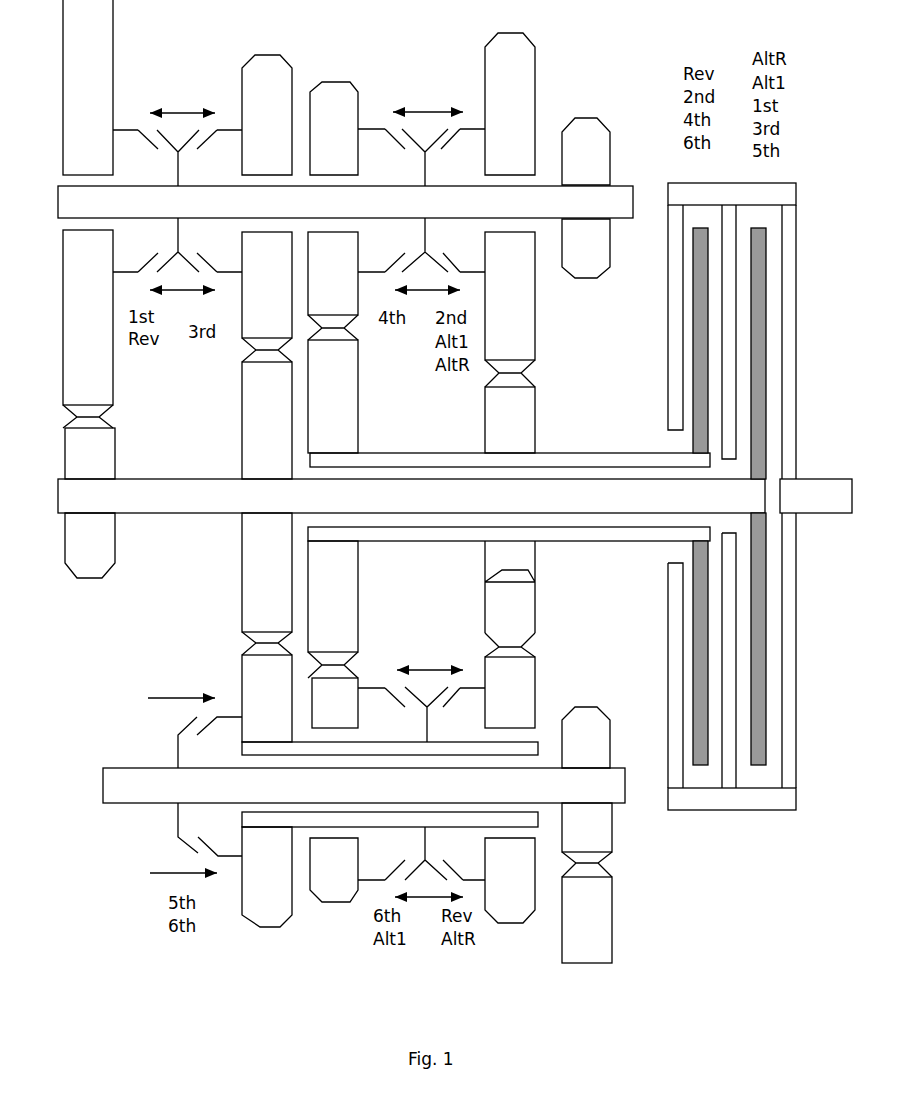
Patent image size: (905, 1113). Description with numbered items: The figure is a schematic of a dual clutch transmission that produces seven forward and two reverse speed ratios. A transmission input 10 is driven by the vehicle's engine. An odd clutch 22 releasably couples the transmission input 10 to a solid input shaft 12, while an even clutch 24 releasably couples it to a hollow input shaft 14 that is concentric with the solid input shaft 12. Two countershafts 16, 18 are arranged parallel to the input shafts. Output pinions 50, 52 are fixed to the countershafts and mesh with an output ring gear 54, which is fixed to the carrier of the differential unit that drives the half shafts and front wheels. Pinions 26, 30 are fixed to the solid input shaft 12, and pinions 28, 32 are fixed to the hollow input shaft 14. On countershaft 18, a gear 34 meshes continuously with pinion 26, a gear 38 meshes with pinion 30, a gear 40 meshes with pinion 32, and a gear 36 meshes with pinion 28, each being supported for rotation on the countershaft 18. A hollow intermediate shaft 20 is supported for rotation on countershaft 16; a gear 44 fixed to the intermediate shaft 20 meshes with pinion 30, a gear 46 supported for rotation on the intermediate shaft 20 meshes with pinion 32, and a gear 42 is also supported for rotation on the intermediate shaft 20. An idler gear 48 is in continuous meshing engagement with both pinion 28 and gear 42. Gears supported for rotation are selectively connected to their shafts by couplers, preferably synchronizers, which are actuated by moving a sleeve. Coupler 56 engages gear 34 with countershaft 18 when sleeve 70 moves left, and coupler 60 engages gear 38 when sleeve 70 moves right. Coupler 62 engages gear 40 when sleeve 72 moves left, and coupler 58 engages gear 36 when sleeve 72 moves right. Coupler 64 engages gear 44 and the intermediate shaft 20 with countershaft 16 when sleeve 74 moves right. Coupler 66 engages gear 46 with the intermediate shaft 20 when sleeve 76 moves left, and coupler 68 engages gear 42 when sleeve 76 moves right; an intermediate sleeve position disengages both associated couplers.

The transmission input 10 is at (816, 496).
The solid input shaft 12 is at (411, 496).
The hollow input shaft 14 is at (612, 453).
The countershaft 16 is at (364, 785).
The countershaft 18 is at (345, 202).
The hollow intermediate shaft 20 is at (522, 742).
The odd clutch 22 is at (778, 815).
The even clutch 24 is at (709, 815).
The pinion 26 is at (90, 503).
The pinion 28 is at (510, 420).
The pinion 30 is at (267, 508).
The pinion 32 is at (333, 396).
The gear 34 is at (88, 329).
The gear 36 is at (510, 309).
The gear 38 is at (267, 297).
The gear 40 is at (333, 286).
The gear 42 is at (510, 692).
The gear 44 is at (267, 698).
The gear 46 is at (335, 703).
The idler gear 48 is at (510, 599).
The output pinion 50 is at (586, 737).
The output pinion 52 is at (586, 198).
The output ring gear 54 is at (587, 883).
The coupler 56 is at (148, 130).
The coupler 58 is at (449, 130).
The coupler 60 is at (204, 131).
The coupler 62 is at (396, 129).
The coupler 64 is at (207, 723).
The coupler 66 is at (398, 688).
The coupler 68 is at (452, 690).
The sleeve 70 is at (177, 110).
The sleeve 72 is at (421, 110).
The sleeve 74 is at (195, 696).
The sleeve 76 is at (421, 667).